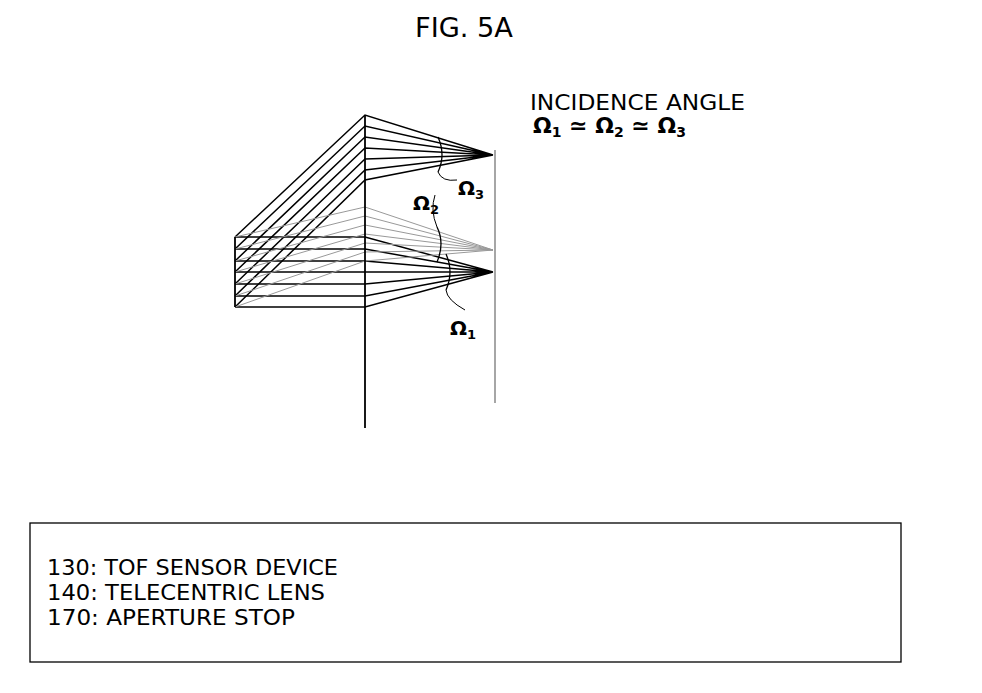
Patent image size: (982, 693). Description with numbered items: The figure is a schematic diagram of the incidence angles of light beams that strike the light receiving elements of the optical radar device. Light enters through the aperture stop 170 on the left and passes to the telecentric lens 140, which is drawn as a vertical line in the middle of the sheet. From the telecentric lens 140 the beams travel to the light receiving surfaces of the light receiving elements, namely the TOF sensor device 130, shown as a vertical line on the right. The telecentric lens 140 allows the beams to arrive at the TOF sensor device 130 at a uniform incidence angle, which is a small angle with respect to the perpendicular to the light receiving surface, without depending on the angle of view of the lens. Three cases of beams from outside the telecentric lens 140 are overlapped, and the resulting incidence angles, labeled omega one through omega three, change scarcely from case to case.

The TOF sensor device 130 is at (511, 264).
The telecentric lens 140 is at (396, 422).
The aperture stop 170 is at (242, 334).